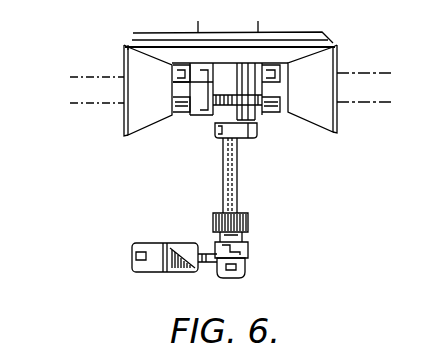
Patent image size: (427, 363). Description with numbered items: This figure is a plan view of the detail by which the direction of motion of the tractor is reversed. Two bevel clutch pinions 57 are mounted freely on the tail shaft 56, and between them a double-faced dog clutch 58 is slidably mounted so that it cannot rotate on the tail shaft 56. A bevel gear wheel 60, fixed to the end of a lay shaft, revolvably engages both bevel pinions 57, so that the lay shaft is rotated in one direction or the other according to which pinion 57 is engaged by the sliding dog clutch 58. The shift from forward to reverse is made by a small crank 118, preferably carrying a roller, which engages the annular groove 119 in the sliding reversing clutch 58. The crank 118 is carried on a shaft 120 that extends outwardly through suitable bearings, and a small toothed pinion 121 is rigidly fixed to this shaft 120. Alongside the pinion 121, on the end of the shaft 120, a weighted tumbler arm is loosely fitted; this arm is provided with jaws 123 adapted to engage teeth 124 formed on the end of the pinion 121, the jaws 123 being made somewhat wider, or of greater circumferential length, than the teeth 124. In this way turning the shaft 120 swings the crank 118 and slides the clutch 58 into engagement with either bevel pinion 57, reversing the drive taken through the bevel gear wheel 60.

The tail shaft 56 is at (97, 93).
The bevel clutch pinions 57 is at (230, 90).
The double-faced dog clutch 58 is at (223, 85).
The bevel gear wheel 60 is at (128, 37).
The crank 118 is at (250, 134).
The annular groove 119 is at (243, 83).
The shaft 120 is at (236, 180).
The toothed pinion 121 is at (248, 222).
The jaws 123 is at (245, 262).
The teeth 124 is at (230, 243).